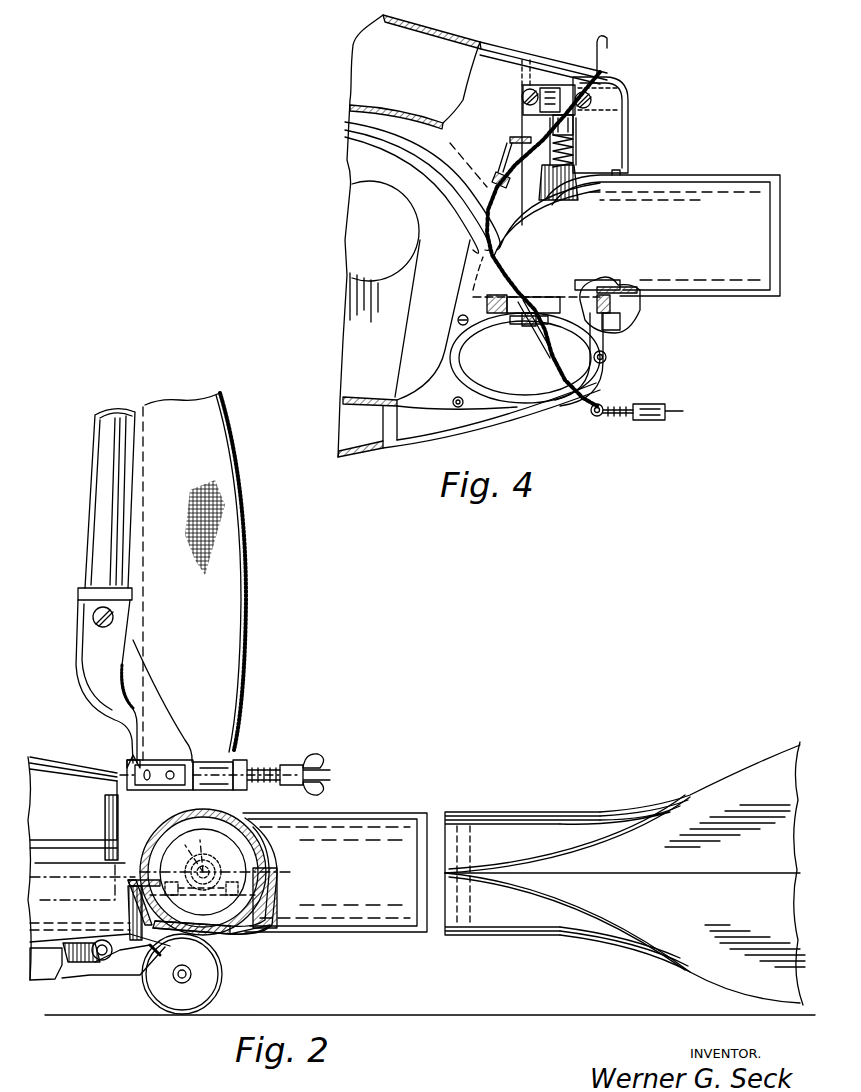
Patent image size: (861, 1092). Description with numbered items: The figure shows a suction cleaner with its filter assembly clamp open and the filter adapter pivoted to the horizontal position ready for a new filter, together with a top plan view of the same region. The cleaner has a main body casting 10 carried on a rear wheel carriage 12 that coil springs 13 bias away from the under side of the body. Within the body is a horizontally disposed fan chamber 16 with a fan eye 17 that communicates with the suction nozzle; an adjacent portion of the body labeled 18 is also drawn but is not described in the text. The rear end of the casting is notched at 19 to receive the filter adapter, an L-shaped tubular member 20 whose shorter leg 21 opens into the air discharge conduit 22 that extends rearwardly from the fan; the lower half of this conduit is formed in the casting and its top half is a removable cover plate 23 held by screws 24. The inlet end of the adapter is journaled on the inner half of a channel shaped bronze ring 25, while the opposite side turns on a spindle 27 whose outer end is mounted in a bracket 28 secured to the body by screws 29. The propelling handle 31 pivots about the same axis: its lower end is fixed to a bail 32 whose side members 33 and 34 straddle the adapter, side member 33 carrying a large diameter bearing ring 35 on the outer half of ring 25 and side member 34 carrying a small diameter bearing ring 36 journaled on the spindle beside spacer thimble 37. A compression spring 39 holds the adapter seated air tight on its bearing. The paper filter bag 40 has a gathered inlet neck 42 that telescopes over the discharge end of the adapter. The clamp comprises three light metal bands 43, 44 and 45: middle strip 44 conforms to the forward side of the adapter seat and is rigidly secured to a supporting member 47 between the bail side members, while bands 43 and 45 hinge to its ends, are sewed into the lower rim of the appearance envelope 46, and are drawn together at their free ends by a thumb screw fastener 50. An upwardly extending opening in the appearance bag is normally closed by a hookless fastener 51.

In FIG. 2, the main body casting 10 is at (100, 921).
In FIG. 2, the rear wheel carriage 12 is at (182, 974).
In FIG. 2, the coil springs 13 is at (150, 950).
In FIG. 4, the fan chamber 16 is at (383, 398).
In FIG. 4, the fan eye 17 is at (402, 196).
In FIG. 2, the hood 18 is at (76, 868).
In FIG. 4, the notch 19 is at (600, 172).
In FIG. 4, the L-shaped tubular member 20 is at (662, 235).
In FIG. 2, the L-shaped tubular member 20 is at (285, 936).
In FIG. 4, the shorter leg 21 is at (503, 266).
In FIG. 4, the air discharge conduit 22 is at (607, 321).
In FIG. 2, the air discharge conduit 22 is at (230, 925).
In FIG. 4, the removable cover plate 23 is at (525, 293).
In FIG. 2, the removable cover plate 23 is at (262, 851).
In FIG. 4, the screws 24 is at (608, 358).
In FIG. 4, the channel shaped bronze ring 25 is at (614, 300).
In FIG. 4, the spindle 27 is at (548, 80).
In FIG. 4, the bracket 28 is at (544, 75).
In FIG. 2, the bracket 28 is at (279, 883).
In FIG. 4, the screws 29 is at (596, 104).
In FIG. 2, the screws 29 is at (230, 895).
In FIG. 2, the propelling handle 31 is at (82, 452).
In FIG. 2, the bail 32 is at (112, 722).
In FIG. 4, the side member 33 is at (505, 328).
In FIG. 2, the side member 33 is at (165, 798).
In FIG. 4, the side member 34 is at (513, 110).
In FIG. 4, the large diameter bearing ring 35 is at (624, 310).
In FIG. 2, the large diameter bearing ring 35 is at (147, 850).
In FIG. 4, the small diameter bearing ring 36 is at (562, 138).
In FIG. 2, the small diameter bearing ring 36 is at (212, 857).
In FIG. 4, the spacer thimble 37 is at (565, 125).
In FIG. 4, the compression spring 39 is at (566, 162).
In FIG. 2, the paper filter bag 40 is at (625, 873).
In FIG. 2, the inlet neck 42 is at (487, 824).
In FIG. 4, the metal band 43 is at (560, 320).
In FIG. 4, the middle strip 44 is at (512, 222).
In FIG. 4, the metal band 45 is at (614, 89).
In FIG. 4, the appearance envelope 46 is at (515, 290).
In FIG. 2, the appearance envelope 46 is at (175, 412).
In FIG. 4, the supporting member 47 is at (505, 160).
In FIG. 2, the supporting member 47 is at (128, 772).
In FIG. 4, the thumb screw fastener 50 is at (612, 425).
In FIG. 2, the thumb screw fastener 50 is at (270, 770).
In FIG. 2, the hookless fastener 51 is at (242, 694).